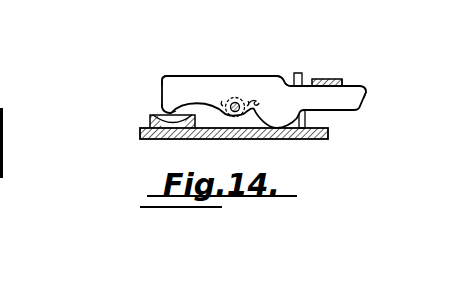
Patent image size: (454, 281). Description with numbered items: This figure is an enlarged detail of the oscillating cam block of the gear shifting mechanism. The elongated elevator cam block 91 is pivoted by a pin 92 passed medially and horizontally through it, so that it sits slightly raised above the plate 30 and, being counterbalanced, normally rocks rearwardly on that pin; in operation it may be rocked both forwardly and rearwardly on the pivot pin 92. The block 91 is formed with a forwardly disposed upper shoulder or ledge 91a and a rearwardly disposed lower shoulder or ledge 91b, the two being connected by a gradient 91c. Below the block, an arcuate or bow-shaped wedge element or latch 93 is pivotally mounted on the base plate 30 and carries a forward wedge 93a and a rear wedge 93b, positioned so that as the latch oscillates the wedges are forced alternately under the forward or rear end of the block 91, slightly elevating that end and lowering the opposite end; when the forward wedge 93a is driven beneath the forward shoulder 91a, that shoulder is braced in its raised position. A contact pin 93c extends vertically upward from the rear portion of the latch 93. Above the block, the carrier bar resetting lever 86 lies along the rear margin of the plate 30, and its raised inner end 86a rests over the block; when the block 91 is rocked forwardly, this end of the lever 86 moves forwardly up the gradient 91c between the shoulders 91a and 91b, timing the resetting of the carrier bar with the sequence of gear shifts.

The plate 30 is at (148, 140).
The carrier bar resetting lever 86 is at (333, 79).
The inner or right-hand end of the resetting lever 86a is at (344, 80).
The elevator cam block 91 is at (195, 76).
The upper shoulder or ledge 91a is at (163, 75).
The lower shoulder or ledge 91b is at (363, 83).
The gradient 91c is at (282, 76).
The pivot pin 92 is at (234, 102).
The wedge element or latch 93 is at (149, 123).
The forward wedge 93a is at (159, 111).
The rear wedge 93b is at (306, 119).
The contact pin 93c is at (300, 72).